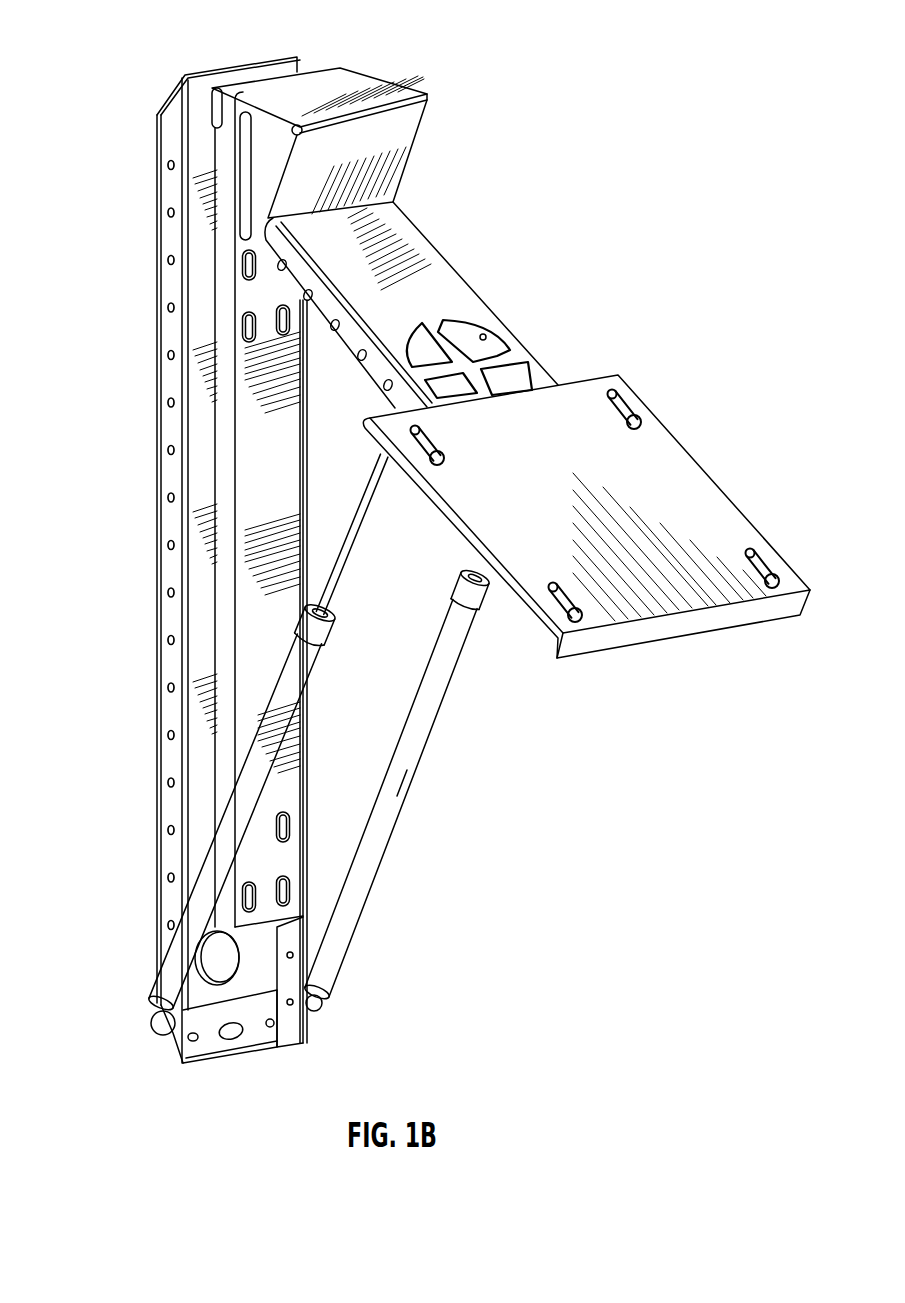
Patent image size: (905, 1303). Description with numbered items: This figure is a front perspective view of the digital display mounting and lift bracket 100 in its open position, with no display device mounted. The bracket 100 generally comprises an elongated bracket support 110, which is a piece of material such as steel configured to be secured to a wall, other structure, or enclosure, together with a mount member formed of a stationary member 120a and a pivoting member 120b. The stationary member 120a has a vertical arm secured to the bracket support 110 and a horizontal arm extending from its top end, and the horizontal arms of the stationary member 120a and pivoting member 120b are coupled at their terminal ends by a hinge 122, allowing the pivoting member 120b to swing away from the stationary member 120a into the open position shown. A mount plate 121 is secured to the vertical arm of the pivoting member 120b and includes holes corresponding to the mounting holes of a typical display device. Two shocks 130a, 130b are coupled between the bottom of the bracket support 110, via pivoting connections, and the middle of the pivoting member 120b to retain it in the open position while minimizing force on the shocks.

The digital display mounting and lift bracket 100 is at (116, 34).
The bracket support 110 is at (157, 302).
The stationary member 120a is at (168, 375).
The pivoting member 120b is at (473, 303).
The mount plate 121 is at (690, 470).
The hinge 122 is at (430, 107).
The shock 130a is at (172, 972).
The shock 130b is at (400, 800).